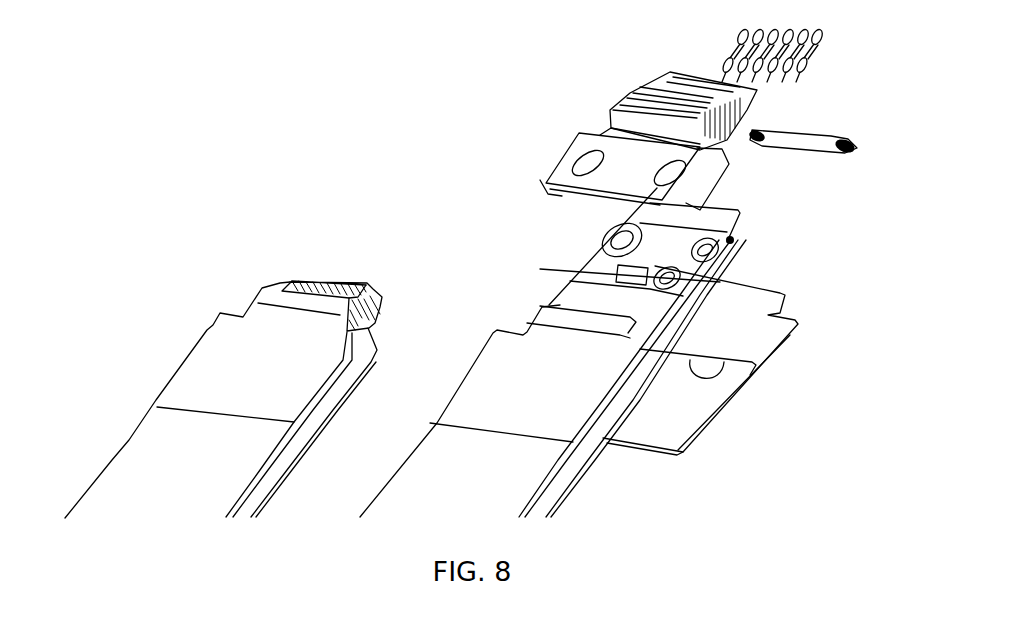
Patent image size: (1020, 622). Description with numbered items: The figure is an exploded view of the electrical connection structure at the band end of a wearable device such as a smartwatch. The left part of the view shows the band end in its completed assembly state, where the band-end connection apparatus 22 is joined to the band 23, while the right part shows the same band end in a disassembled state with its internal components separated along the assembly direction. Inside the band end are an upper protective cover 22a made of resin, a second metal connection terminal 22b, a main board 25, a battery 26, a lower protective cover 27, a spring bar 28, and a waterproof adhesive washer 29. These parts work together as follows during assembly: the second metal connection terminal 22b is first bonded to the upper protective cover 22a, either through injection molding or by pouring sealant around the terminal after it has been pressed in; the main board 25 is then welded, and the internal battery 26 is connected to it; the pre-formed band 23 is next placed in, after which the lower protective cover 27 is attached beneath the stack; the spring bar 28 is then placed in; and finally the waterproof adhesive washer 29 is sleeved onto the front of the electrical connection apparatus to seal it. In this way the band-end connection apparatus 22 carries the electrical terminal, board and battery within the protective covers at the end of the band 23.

The band-end connection apparatus 22 is at (354, 301).
The upper protective cover 22a is at (568, 158).
The second metal connection terminal 22b is at (728, 51).
The band 23 is at (267, 348).
The main board 25 is at (660, 201).
The battery 26 is at (580, 273).
The lower protective cover 27 is at (722, 370).
The spring bar 28 is at (827, 152).
The waterproof adhesive washer 29 is at (668, 73).